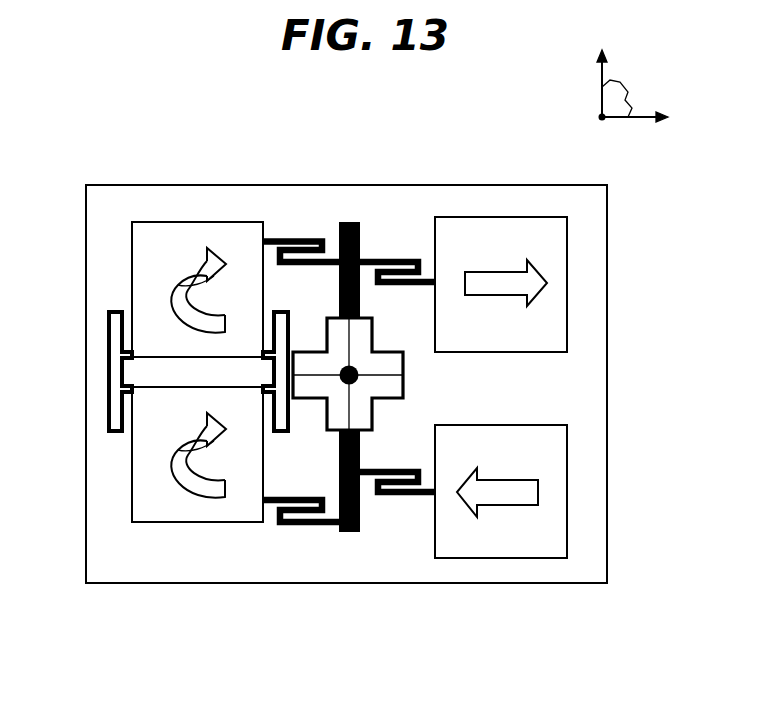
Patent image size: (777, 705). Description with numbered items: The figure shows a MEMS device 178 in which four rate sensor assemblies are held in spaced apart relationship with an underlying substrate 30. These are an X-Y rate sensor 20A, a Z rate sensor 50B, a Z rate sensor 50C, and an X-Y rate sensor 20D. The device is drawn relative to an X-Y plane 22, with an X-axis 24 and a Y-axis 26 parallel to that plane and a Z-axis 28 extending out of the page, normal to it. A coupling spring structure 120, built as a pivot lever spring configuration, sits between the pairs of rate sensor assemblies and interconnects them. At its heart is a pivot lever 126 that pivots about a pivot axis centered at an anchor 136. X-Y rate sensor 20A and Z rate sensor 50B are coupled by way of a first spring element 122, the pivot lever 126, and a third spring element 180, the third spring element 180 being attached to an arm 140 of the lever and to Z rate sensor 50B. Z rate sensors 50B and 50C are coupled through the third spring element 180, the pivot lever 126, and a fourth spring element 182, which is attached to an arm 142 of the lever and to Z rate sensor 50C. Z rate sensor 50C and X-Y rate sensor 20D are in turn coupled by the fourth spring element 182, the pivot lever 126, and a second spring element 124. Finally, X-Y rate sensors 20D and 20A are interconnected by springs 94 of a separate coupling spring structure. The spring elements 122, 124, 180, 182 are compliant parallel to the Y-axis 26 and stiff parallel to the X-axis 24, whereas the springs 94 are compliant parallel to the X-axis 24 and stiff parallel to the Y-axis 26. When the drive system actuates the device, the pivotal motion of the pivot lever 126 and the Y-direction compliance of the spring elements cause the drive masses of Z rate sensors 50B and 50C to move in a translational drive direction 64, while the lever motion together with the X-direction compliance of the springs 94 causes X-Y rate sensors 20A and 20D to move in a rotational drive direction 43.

The substrate 30 is at (89, 186).
The X-Y rate sensor 20A is at (132, 270).
The X-Y rate sensor 20D is at (132, 512).
The rotational drive direction 43 is at (200, 258).
The springs 94 is at (107, 375).
The first spring element 122 is at (306, 236).
The second spring element 124 is at (328, 532).
The pivot lever 126 is at (352, 222).
The coupling spring structure 120 is at (349, 538).
The anchor 136 is at (352, 370).
The arm 140 is at (362, 318).
The arm 142 is at (360, 443).
The third spring element 180 is at (414, 258).
The fourth spring element 182 is at (405, 496).
The Z rate sensor 50B is at (563, 275).
The Z rate sensor 50C is at (563, 476).
The translational drive direction 64 is at (510, 272).
The MEMS device 178 is at (161, 650).
The X-Y plane 22 is at (628, 92).
The X-axis 24 is at (646, 113).
The Y-axis 26 is at (602, 67).
The Z-axis 28 is at (602, 125).